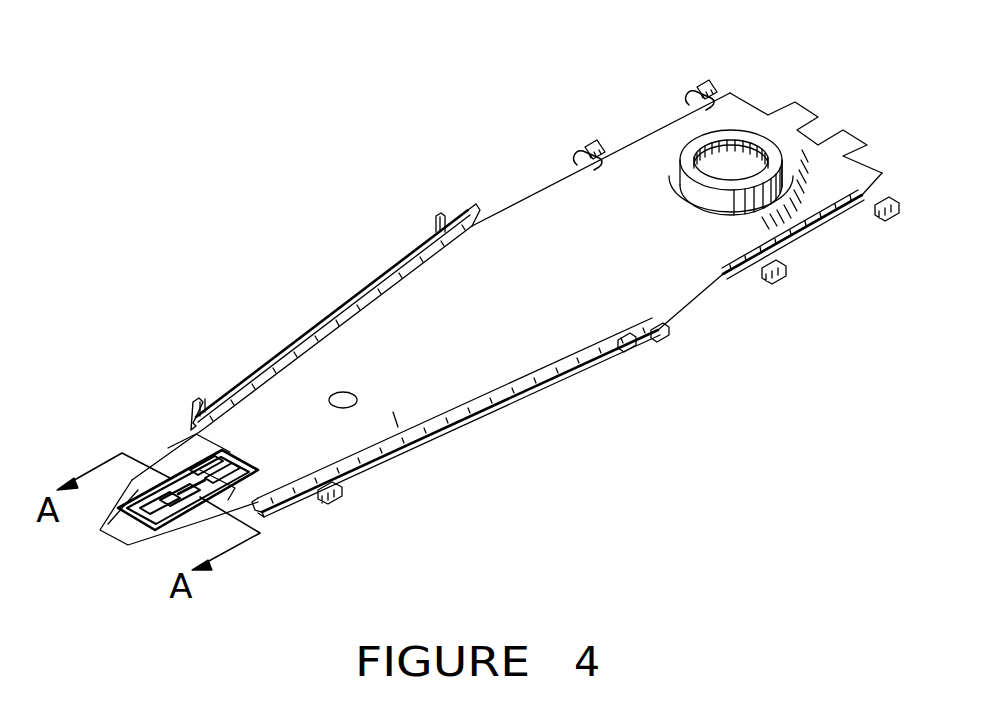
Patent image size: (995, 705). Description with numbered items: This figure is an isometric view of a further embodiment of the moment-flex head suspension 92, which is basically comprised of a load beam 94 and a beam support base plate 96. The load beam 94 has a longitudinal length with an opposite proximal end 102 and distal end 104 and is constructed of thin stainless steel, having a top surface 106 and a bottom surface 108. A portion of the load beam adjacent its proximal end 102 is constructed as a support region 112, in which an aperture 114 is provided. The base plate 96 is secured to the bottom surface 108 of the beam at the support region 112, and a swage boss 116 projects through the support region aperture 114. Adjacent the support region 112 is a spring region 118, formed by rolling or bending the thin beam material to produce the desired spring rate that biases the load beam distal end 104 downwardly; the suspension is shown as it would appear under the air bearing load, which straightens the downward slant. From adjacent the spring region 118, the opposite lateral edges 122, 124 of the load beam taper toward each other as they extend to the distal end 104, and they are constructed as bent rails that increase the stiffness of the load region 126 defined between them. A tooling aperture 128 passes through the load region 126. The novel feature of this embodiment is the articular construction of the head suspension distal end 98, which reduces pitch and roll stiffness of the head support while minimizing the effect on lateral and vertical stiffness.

The moment-flex head suspension 92 is at (280, 216).
The load beam 94 is at (423, 317).
The beam support base plate 96 is at (840, 217).
The head suspension distal end 98 is at (187, 457).
The proximal end 102 is at (822, 119).
The distal end 104 is at (104, 556).
The top surface 106 is at (360, 343).
The bottom surface 108 is at (413, 450).
The support region 112 is at (673, 138).
The aperture 114 is at (675, 168).
The swage boss 116 is at (735, 133).
The spring region 118 is at (578, 228).
The lateral edge 122 is at (277, 363).
The lateral edge 124 is at (370, 467).
The load region 126 is at (288, 447).
The tooling aperture 128 is at (357, 397).